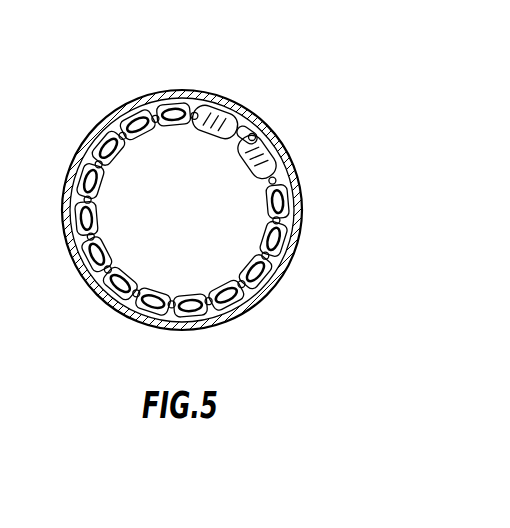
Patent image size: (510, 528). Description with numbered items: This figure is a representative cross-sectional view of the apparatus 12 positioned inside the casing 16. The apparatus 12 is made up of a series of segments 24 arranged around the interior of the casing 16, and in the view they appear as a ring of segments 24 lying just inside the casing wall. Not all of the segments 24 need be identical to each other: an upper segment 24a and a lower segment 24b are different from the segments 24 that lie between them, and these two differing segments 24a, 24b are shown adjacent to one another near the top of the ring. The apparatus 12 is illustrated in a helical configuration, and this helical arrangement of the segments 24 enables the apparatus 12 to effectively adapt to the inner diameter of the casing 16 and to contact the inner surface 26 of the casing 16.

The apparatus 12 is at (78, 268).
The casing 16 is at (142, 97).
The segments 24 is at (98, 215).
The upper segment 24a is at (212, 136).
The lower segment 24b is at (247, 160).
The inner surface 26 is at (138, 291).